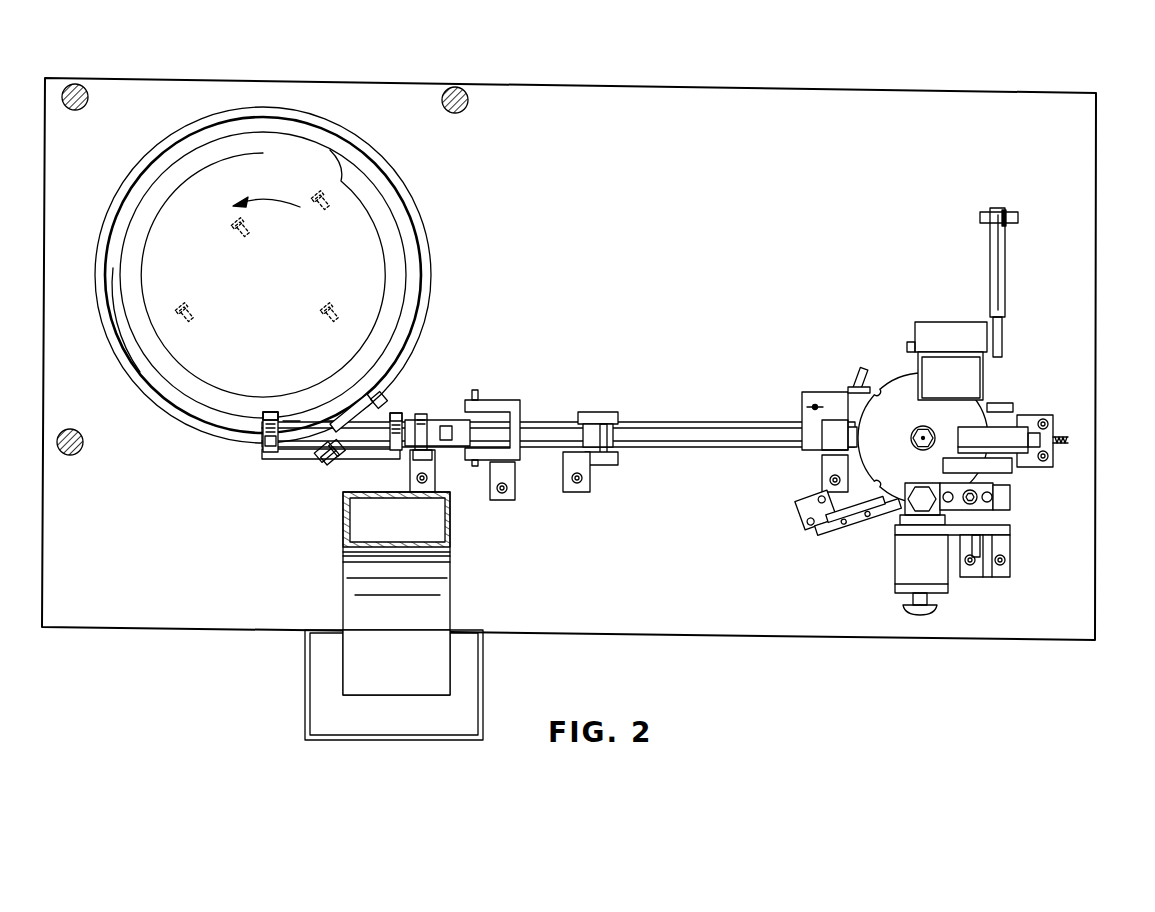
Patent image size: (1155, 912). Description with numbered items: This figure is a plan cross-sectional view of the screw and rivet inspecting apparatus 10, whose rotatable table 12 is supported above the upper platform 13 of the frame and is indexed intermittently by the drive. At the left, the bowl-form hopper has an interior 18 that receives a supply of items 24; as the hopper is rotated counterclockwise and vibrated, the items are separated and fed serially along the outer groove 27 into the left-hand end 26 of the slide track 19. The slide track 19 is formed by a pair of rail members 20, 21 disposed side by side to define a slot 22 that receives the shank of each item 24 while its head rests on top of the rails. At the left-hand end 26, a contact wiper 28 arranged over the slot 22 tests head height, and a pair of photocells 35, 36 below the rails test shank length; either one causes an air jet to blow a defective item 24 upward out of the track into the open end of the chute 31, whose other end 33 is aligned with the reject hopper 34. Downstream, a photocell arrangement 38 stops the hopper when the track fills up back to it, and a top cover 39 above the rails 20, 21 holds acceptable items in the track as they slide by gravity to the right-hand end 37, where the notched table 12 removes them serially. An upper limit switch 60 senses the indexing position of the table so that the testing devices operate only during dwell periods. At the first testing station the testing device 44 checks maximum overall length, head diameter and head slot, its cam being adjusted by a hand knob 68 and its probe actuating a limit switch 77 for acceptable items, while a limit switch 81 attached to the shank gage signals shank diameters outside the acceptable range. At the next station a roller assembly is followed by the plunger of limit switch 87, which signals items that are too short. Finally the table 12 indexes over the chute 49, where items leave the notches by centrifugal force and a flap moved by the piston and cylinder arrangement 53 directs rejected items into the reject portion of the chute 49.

The apparatus 10 is at (595, 372).
The rotatable table 12 is at (893, 387).
The upper platform 13 is at (1078, 170).
The bowl interior 18 is at (375, 218).
The slide track 19 is at (673, 447).
The rail member 20 is at (303, 437).
The rail member 21 is at (428, 418).
The slot 22 is at (292, 414).
The item 24 is at (236, 232).
The left-hand end of slide track 26 is at (265, 412).
The outer groove 27 is at (220, 420).
The contact wiper 28 is at (336, 410).
The chute 31 is at (343, 583).
The other end of chute 33 is at (450, 672).
The reject hopper 34 is at (308, 688).
The photocell 35 is at (345, 448).
The photocell 36 is at (388, 395).
The right-hand end of slide track 37 is at (857, 400).
The photocell arrangement 38 is at (487, 392).
The top cover 39 is at (708, 432).
The testing device 44 is at (1016, 497).
The chute 49 is at (987, 382).
The piston and cylinder arrangement 53 is at (1006, 274).
The upper limit switch 60 is at (843, 417).
The hand knob 68 is at (935, 606).
The limit switch 77 is at (853, 540).
The limit switch 81 is at (903, 560).
The limit switch 87 is at (1007, 437).